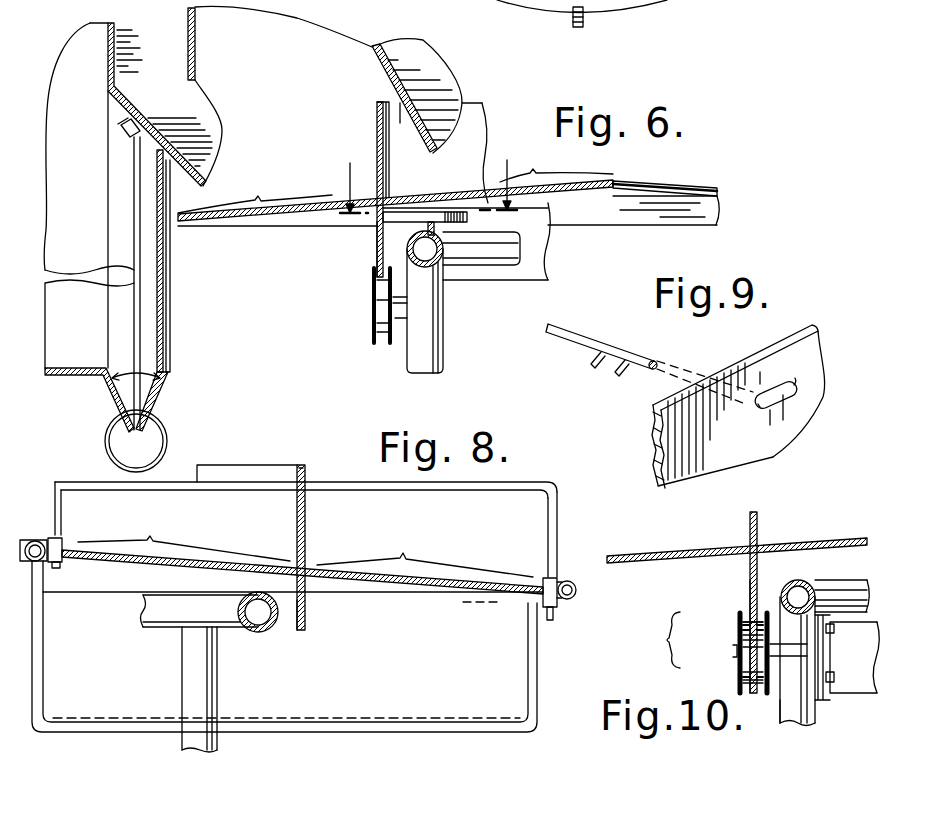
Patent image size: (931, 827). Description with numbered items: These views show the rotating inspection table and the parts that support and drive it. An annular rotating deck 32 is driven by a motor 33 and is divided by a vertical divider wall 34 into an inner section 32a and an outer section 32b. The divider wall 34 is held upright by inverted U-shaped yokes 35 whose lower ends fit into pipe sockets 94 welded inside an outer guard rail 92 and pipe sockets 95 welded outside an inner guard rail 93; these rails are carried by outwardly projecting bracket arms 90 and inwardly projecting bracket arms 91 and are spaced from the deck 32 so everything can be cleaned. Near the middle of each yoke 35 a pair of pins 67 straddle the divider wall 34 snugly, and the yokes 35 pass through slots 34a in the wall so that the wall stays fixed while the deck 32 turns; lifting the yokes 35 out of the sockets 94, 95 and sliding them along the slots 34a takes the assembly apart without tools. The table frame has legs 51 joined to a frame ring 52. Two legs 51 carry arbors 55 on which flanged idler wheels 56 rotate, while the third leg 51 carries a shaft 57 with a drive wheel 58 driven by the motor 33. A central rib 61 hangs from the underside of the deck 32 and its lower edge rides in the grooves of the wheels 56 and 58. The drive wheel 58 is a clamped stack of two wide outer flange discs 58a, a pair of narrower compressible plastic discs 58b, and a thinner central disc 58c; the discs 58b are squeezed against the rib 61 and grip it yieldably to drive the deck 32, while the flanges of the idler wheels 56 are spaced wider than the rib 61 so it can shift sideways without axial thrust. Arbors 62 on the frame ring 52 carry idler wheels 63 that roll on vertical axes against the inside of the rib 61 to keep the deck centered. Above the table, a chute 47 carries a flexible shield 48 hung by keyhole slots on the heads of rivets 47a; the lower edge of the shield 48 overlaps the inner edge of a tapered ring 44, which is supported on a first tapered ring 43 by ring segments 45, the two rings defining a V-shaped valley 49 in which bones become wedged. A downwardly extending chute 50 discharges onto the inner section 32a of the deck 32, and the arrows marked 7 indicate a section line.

In FIG. 6, the section line of FIG. 7 is at (428, 174).
In FIG. 6, the annular rotating deck 32 is at (270, 222).
In FIG. 8, the annular rotating deck 32 is at (393, 584).
In FIG. 10, the annular rotating deck 32 is at (838, 510).
In FIG. 6, the inner section 32a is at (608, 172).
In FIG. 8, the inner section 32a is at (184, 535).
In FIG. 6, the outer section 32b is at (255, 190).
In FIG. 8, the outer section 32b is at (425, 556).
In FIG. 10, the motor 33 is at (863, 669).
In FIG. 6, the vertical divider wall 34 is at (377, 112).
In FIG. 9, the vertical divider wall 34 is at (750, 443).
In FIG. 8, the vertical divider wall 34 is at (305, 515).
In FIG. 10, the vertical divider wall 34 is at (750, 523).
In FIG. 9, the slots 34a is at (800, 397).
In FIG. 9, the yokes 35 is at (572, 341).
In FIG. 8, the yokes 35 is at (402, 487).
In FIG. 6, the first tapered ring 43 is at (110, 393).
In FIG. 6, the tapered ring 44 is at (162, 398).
In FIG. 6, the ring segments 45 is at (167, 431).
In FIG. 6, the chute 47 is at (197, 117).
In FIG. 6, the rivets 47a is at (121, 130).
In FIG. 6, the shield 48 is at (163, 305).
In FIG. 6, the V-shaped valley 49 is at (152, 370).
In FIG. 6, the downwardly extending chute 50 is at (430, 72).
In FIG. 10, the legs 51 is at (782, 717).
In FIG. 6, the frame ring 52 is at (440, 289).
In FIG. 8, the frame ring 52 is at (263, 630).
In FIG. 10, the frame ring 52 is at (800, 580).
In FIG. 6, the arbors 55 is at (400, 322).
In FIG. 6, the flanged idler wheels 56 is at (372, 290).
In FIG. 10, the shaft 57 is at (817, 710).
In FIG. 10, the drive wheel 58 is at (720, 652).
In FIG. 10, the outer flange discs 58a is at (740, 680).
In FIG. 10, the wear-resistant plastic discs 58b is at (749, 641).
In FIG. 10, the central disc 58c is at (740, 628).
In FIG. 6, the central rib 61 is at (377, 238).
In FIG. 8, the central rib 61 is at (305, 612).
In FIG. 10, the central rib 61 is at (750, 575).
In FIG. 6, the arbors 62 is at (430, 227).
In FIG. 6, the idler wheels 63 is at (557, 222).
In FIG. 9, the pins 67 is at (602, 372).
In FIG. 8, the pins 67 is at (305, 468).
In FIG. 8, the outwardly projecting bracket arms 90 is at (421, 717).
In FIG. 8, the inwardly projecting bracket arms 91 is at (126, 724).
In FIG. 8, the outer guard rail 92 is at (575, 585).
In FIG. 8, the inner guard rail 93 is at (36, 535).
In FIG. 8, the pipe sockets 94 is at (560, 576).
In FIG. 8, the pipe sockets 95 is at (62, 540).